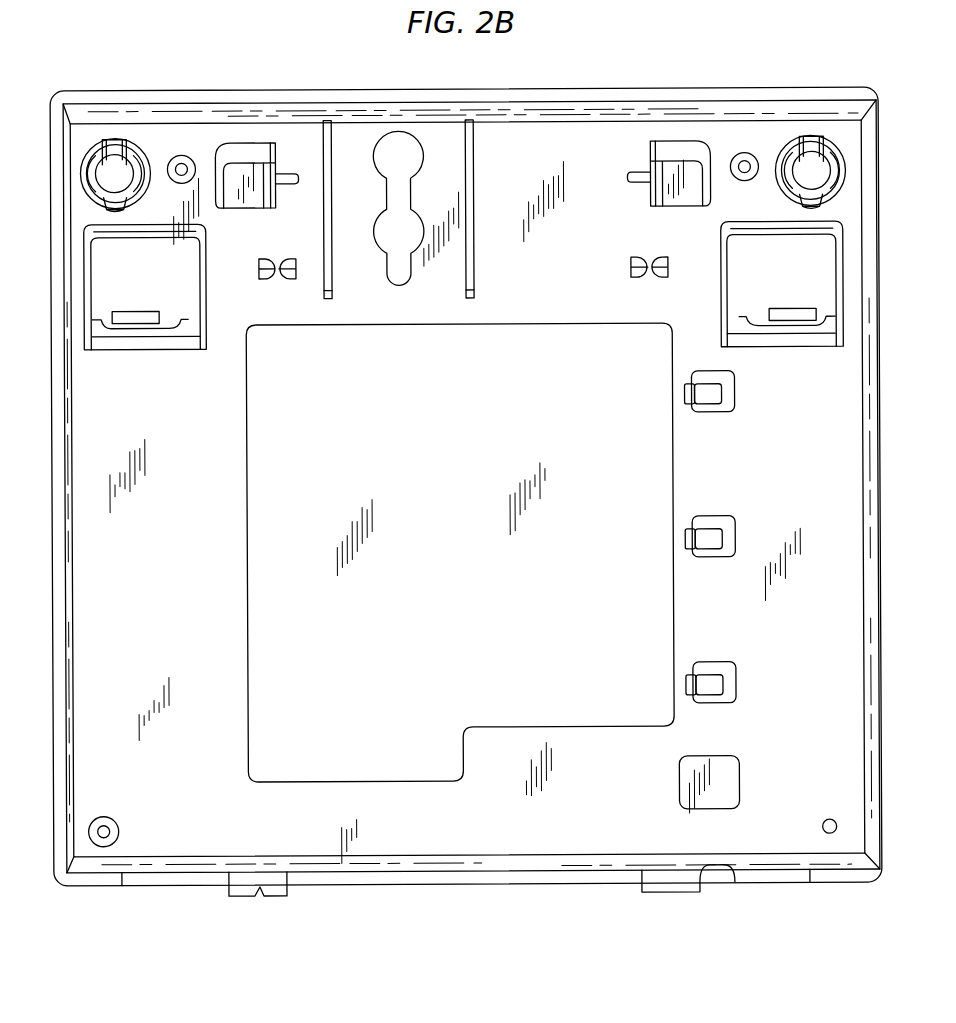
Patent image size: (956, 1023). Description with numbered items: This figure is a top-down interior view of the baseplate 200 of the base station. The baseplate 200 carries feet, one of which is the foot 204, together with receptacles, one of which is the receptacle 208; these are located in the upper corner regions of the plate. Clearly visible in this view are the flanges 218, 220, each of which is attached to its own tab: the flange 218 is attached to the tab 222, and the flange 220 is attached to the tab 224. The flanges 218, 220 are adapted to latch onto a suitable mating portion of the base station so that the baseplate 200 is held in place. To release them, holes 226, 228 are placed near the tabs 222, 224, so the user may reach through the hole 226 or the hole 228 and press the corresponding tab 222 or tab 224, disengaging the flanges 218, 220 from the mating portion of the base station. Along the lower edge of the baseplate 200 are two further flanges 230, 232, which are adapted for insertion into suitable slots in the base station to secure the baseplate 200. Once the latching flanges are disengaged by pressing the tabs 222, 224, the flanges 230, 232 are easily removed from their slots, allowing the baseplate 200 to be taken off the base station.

The baseplate 200 is at (131, 905).
The foot 204 is at (116, 156).
The receptacle 208 is at (140, 150).
The flange 218 is at (790, 308).
The flange 220 is at (142, 310).
The tab 222 is at (760, 318).
The tab 224 is at (171, 323).
The hole 226 is at (742, 287).
The hole 228 is at (190, 288).
The flange 230 is at (663, 893).
The flange 232 is at (270, 895).